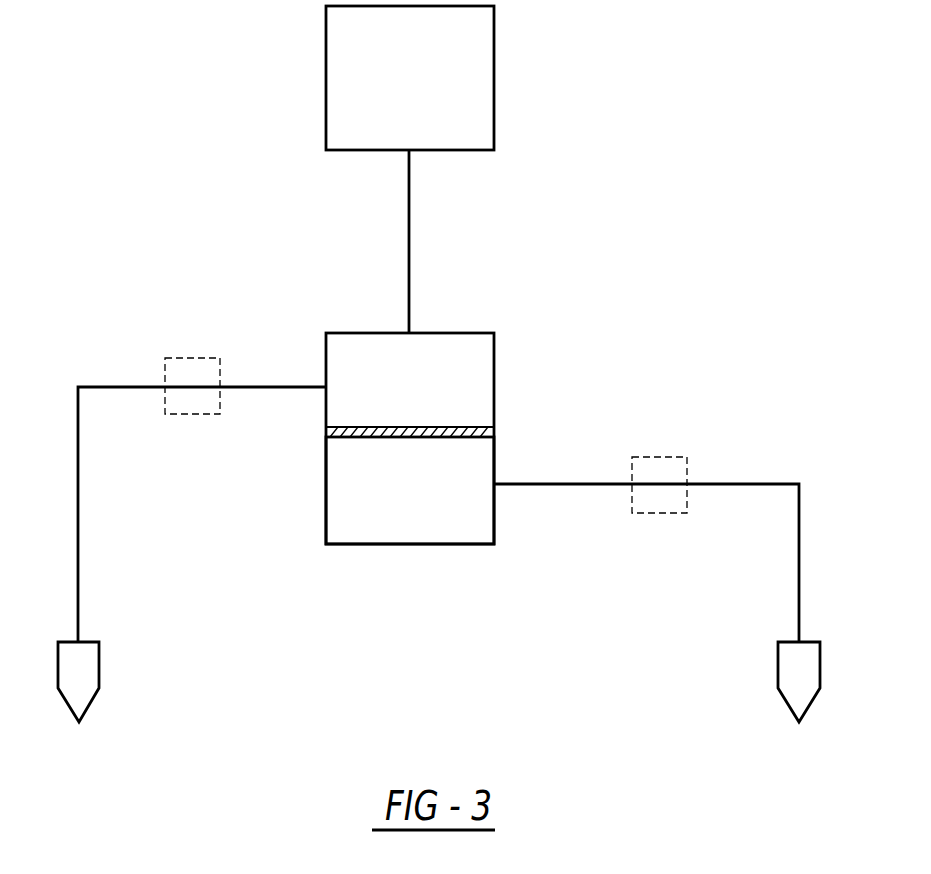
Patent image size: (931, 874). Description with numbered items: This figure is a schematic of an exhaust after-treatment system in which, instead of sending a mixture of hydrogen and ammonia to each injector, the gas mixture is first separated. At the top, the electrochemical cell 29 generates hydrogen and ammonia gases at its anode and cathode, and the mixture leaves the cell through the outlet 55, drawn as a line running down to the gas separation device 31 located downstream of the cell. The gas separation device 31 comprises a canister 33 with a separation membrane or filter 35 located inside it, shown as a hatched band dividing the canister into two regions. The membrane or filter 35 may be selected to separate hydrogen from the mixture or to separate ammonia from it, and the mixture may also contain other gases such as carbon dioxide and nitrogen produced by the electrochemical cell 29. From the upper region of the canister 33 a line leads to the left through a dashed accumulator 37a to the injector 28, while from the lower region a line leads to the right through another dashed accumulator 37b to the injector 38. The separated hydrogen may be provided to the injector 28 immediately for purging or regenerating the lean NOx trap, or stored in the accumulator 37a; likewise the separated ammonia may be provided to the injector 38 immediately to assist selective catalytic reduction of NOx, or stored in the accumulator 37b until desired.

The electrochemical cell 29 is at (421, 94).
The outlet 55 is at (409, 232).
The gas separation device 31 is at (494, 368).
The separation membrane or filter 35 is at (460, 437).
The canister 33 is at (326, 468).
The accumulator 37a is at (192, 358).
The accumulator 37b is at (670, 457).
The injector 28 is at (99, 672).
The injector 38 is at (778, 664).